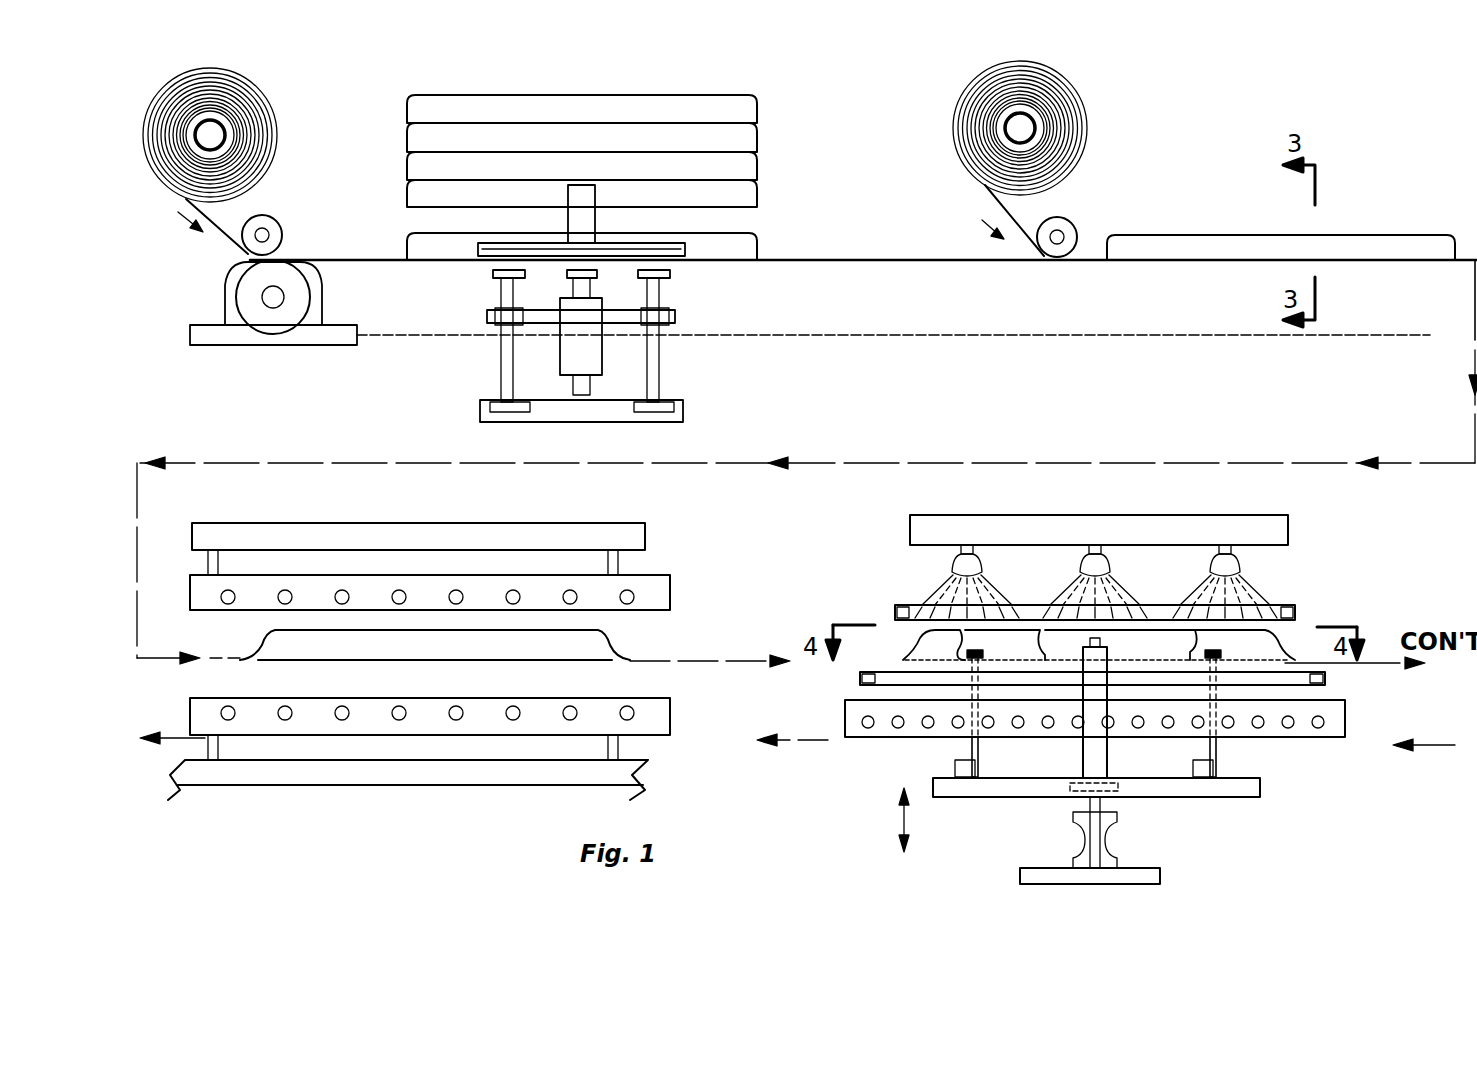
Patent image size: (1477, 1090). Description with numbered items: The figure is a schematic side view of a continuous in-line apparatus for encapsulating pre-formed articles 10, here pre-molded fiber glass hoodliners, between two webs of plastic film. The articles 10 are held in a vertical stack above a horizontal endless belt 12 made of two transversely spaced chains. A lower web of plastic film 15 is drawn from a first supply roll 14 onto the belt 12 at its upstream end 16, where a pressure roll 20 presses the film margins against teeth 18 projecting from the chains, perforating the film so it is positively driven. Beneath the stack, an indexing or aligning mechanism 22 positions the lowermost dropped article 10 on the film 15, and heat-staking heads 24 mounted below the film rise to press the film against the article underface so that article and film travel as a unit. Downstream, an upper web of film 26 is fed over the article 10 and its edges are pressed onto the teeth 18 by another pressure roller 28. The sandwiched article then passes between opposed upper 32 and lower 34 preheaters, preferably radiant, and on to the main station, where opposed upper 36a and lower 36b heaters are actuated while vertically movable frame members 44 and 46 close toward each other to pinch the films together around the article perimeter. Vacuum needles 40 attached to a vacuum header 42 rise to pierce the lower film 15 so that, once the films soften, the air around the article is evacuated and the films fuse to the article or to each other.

The pre-formed articles 10 is at (745, 142).
The endless belt 12 is at (888, 262).
The first supply roll 14 is at (255, 100).
The web of plastic film 15 is at (225, 226).
The upstream end 16 is at (222, 262).
The teeth 18 is at (265, 333).
The pressure roll 20 is at (272, 232).
The indexing or aligning mechanism 22 is at (690, 263).
The heat-staking heads 24 is at (495, 272).
The upper web of film 26 is at (1018, 225).
The pressure roller 28 is at (1070, 230).
The upper heater 32 is at (670, 598).
The lower heater 34 is at (670, 722).
The upper heater 36a is at (1288, 530).
The lower heater 36b is at (1340, 725).
The vacuum needles 40 is at (965, 690).
The vacuum header 42 is at (1003, 797).
The upper frame member 44 is at (1293, 605).
The lower frame member 46 is at (1325, 680).